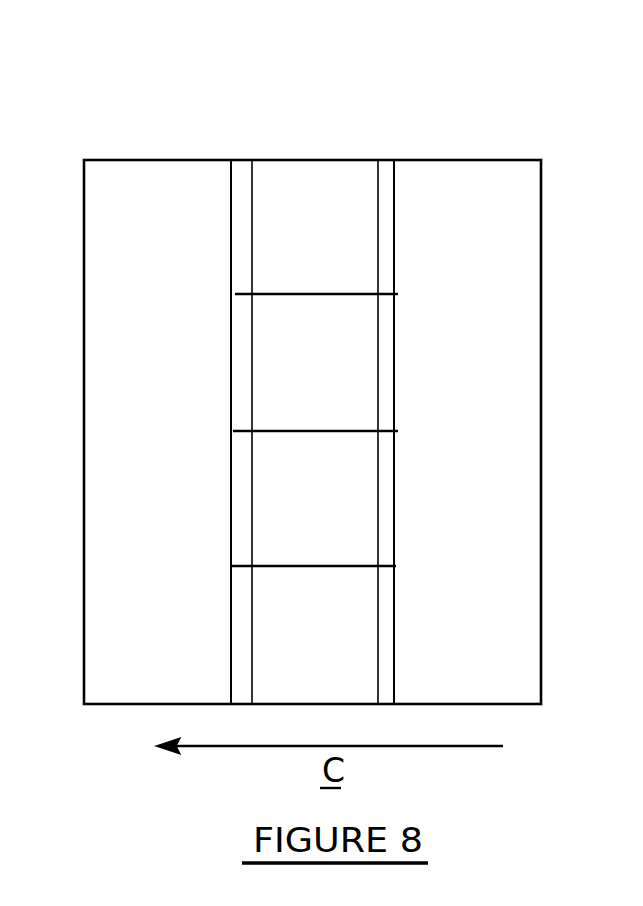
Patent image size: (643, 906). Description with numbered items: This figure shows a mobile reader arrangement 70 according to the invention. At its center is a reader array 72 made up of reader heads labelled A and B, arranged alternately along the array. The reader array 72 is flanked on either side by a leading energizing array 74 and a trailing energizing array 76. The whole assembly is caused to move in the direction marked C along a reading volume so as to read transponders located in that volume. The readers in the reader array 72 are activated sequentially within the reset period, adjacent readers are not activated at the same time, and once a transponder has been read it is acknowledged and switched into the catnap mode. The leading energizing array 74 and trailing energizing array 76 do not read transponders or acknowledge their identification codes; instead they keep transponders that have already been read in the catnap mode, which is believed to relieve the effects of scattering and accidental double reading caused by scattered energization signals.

The mobile reader arrangement 70 is at (533, 95).
The reader array 72 is at (328, 157).
The leading energizing array 74 is at (168, 456).
The trailing energizing array 76 is at (488, 421).